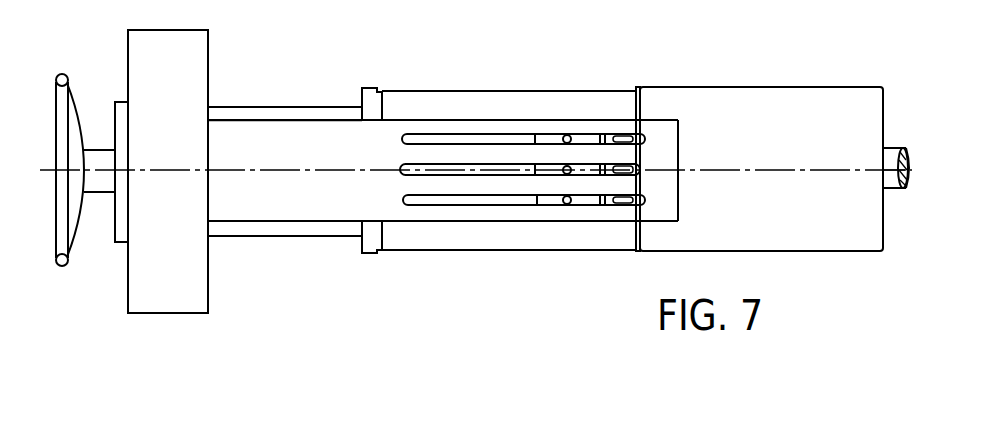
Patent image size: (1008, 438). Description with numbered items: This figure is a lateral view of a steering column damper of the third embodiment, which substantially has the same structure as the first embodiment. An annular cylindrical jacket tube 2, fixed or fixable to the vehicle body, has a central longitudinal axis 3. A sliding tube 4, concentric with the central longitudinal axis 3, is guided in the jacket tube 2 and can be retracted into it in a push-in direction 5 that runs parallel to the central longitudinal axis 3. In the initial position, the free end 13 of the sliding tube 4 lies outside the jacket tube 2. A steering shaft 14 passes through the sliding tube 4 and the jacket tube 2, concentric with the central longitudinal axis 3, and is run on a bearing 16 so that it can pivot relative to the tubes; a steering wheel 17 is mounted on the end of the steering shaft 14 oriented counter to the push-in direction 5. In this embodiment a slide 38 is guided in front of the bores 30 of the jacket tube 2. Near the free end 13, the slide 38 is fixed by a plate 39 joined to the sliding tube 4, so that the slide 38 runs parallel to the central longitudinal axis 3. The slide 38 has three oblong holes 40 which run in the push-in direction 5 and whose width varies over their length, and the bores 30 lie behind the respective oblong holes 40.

The jacket tube 2 is at (763, 80).
The central longitudinal axis 3 is at (787, 170).
The sliding tube 4 is at (287, 100).
The push-in direction 5 is at (562, 65).
The free end 13 is at (120, 110).
The steering shaft 14 is at (93, 185).
The bearing 16 is at (430, 71).
The steering wheel 17 is at (62, 266).
The bores 30 is at (563, 145).
The slide 38 is at (287, 197).
The plate 39 is at (167, 282).
The oblong holes 40 is at (412, 199).